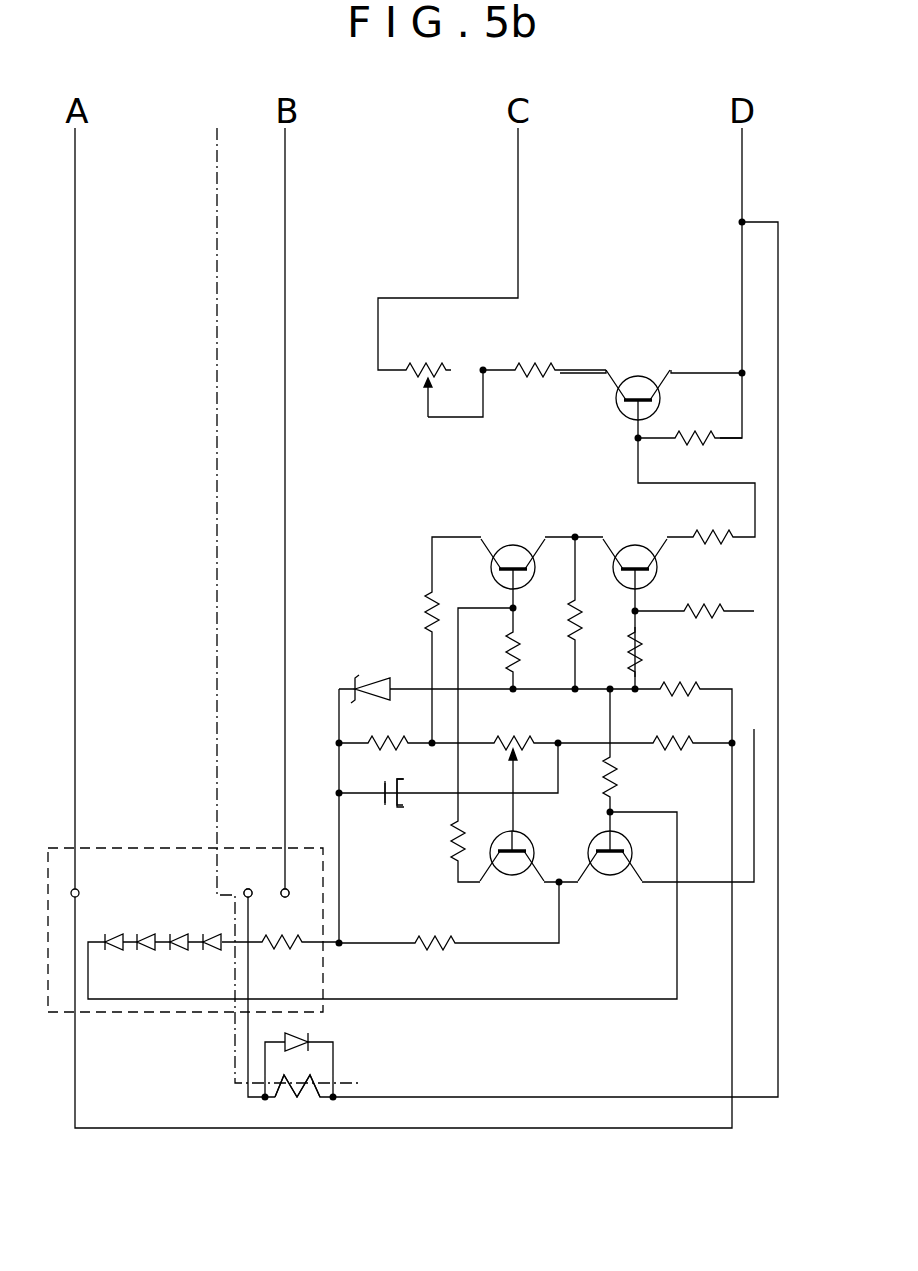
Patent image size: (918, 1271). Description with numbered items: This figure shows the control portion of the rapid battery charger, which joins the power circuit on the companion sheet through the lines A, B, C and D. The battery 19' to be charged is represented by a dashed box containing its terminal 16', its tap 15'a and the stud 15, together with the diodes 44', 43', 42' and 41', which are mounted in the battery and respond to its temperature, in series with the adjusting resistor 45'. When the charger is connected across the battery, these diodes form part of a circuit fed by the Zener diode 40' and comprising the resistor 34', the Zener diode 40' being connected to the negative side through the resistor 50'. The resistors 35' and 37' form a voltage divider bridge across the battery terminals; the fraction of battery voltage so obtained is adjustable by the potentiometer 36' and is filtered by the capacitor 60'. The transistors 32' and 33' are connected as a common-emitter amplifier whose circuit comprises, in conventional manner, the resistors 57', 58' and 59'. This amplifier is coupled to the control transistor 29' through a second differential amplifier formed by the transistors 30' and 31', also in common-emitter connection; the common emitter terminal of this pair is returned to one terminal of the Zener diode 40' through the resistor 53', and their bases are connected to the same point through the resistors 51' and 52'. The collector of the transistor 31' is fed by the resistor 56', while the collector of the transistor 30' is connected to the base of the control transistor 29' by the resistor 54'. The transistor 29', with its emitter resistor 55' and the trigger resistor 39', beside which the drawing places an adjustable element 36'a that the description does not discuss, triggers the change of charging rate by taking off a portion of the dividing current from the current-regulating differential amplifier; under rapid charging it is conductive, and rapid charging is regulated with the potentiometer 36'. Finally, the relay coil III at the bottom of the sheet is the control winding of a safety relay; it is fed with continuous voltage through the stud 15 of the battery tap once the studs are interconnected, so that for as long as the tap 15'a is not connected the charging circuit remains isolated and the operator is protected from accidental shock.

The potentiometer 36'a is at (440, 369).
The trigger resistor 39' is at (535, 349).
The control transistor 29' is at (651, 373).
The emitter resistor 55' is at (690, 416).
The transistor 31' is at (513, 540).
The transistor 30' is at (635, 543).
The resistor 54' is at (713, 519).
The resistor 56' is at (410, 605).
The resistor 53' is at (556, 618).
The resistor 51' is at (491, 652).
The resistor 52' is at (612, 652).
The resistor 58' is at (709, 593).
The resistor 50' is at (687, 673).
The Zener diode 40' is at (365, 659).
The potentiometer 36' is at (528, 762).
The resistor 37' is at (681, 728).
The resistor 35' is at (405, 760).
The resistor 34' is at (640, 778).
The capacitor 60' is at (372, 813).
The resistor 57' is at (431, 841).
The transistor 32' is at (512, 877).
The transistor 33' is at (610, 880).
The resistor 59' is at (449, 960).
The battery 19' is at (185, 906).
The battery terminal 16' is at (102, 879).
The battery tap 15'a is at (251, 875).
The stud 15 is at (304, 910).
The diode 44' is at (127, 919).
The diode 43' is at (160, 963).
The diode 42' is at (186, 922).
The diode 41' is at (219, 963).
The adjusting resistor 45' is at (285, 966).
The control winding of safety relay III is at (290, 1103).